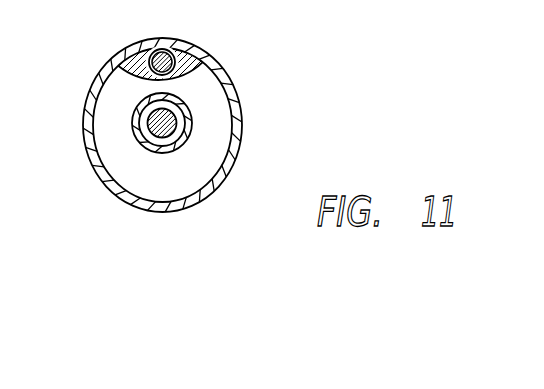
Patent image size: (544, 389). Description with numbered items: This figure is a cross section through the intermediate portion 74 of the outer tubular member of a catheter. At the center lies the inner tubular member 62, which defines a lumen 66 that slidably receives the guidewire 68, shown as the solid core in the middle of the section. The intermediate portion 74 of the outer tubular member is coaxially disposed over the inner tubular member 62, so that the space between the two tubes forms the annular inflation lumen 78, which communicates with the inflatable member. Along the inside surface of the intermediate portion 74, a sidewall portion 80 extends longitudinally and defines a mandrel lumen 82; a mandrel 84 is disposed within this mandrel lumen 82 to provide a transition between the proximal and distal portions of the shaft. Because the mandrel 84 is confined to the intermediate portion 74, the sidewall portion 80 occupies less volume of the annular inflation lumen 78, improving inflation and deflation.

The inner tubular member 62 is at (192, 124).
The lumen 66 is at (162, 146).
The guidewire 68 is at (152, 130).
The intermediate portion 74 is at (226, 80).
The annular inflation lumen 78 is at (100, 121).
The sidewall portion 80 is at (131, 72).
The mandrel lumen 82 is at (181, 55).
The mandrel 84 is at (154, 51).